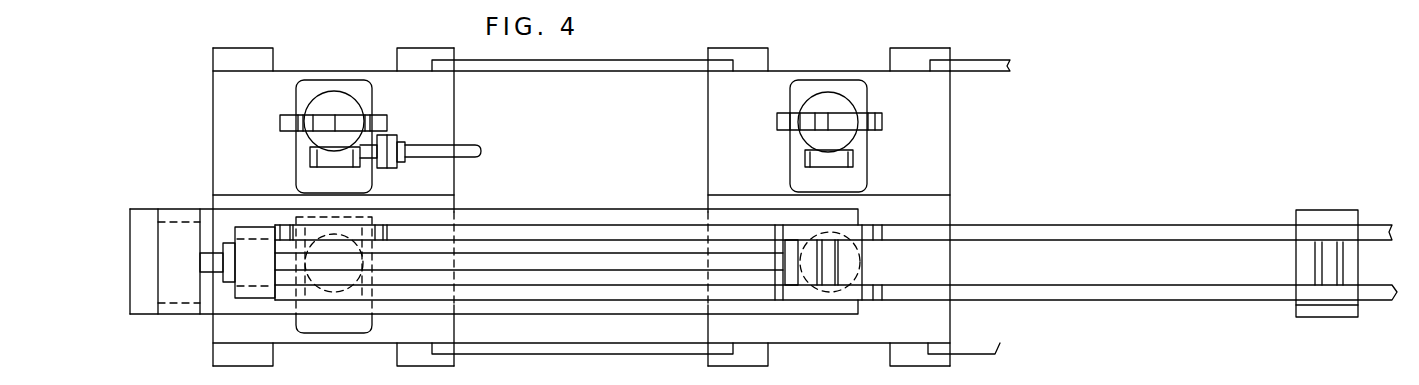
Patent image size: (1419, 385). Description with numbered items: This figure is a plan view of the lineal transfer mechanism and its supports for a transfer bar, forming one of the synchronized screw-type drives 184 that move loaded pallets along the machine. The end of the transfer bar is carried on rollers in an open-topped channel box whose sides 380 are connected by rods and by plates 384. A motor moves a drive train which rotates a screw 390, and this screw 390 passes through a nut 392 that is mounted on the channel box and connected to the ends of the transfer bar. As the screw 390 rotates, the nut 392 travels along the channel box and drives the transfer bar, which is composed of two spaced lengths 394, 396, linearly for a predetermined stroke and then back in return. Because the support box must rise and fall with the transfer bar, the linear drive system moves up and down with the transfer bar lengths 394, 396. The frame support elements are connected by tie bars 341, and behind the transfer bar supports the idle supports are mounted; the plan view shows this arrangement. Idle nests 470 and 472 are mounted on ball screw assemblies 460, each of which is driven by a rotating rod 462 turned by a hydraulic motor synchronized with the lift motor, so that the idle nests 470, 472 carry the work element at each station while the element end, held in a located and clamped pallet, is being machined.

The screw-type drive 184 is at (199, 146).
The tie bar 341 is at (682, 62).
The side of open-topped channel box 380 is at (640, 198).
The plate 384 is at (795, 290).
The screw 390 is at (207, 253).
The nut 392 is at (250, 252).
The transfer bar length 394 is at (1123, 212).
The transfer bar length 396 is at (1103, 292).
The ball screw assembly 460 is at (289, 86).
The rotating rod 462 is at (477, 158).
The idle nest 470 is at (321, 118).
The idle nest 472 is at (800, 128).